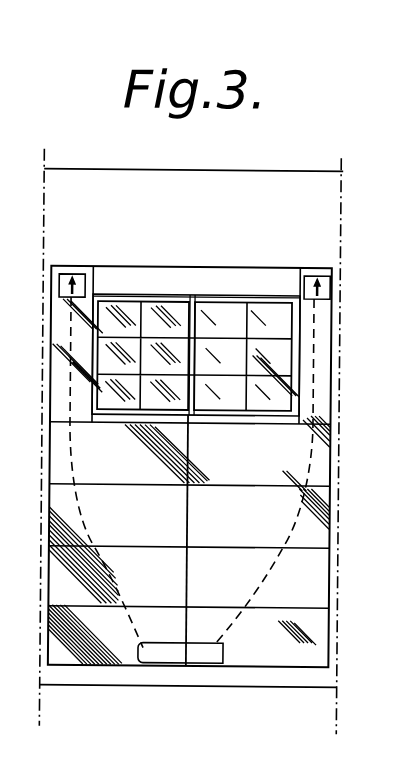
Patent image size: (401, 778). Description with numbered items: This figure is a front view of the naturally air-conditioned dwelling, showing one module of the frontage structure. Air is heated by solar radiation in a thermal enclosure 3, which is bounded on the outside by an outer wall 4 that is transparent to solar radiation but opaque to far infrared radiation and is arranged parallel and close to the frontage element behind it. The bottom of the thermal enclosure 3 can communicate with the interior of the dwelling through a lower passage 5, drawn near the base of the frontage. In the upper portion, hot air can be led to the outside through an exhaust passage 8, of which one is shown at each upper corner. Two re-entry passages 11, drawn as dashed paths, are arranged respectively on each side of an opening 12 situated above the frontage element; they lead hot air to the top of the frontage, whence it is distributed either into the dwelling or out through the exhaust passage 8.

The thermal enclosure 3 is at (88, 620).
The outer wall 4 is at (298, 583).
The lower passage 5 is at (191, 660).
The exhaust passage 8 is at (321, 290).
The re-entry passage 11 is at (321, 388).
The opening 12 is at (205, 312).